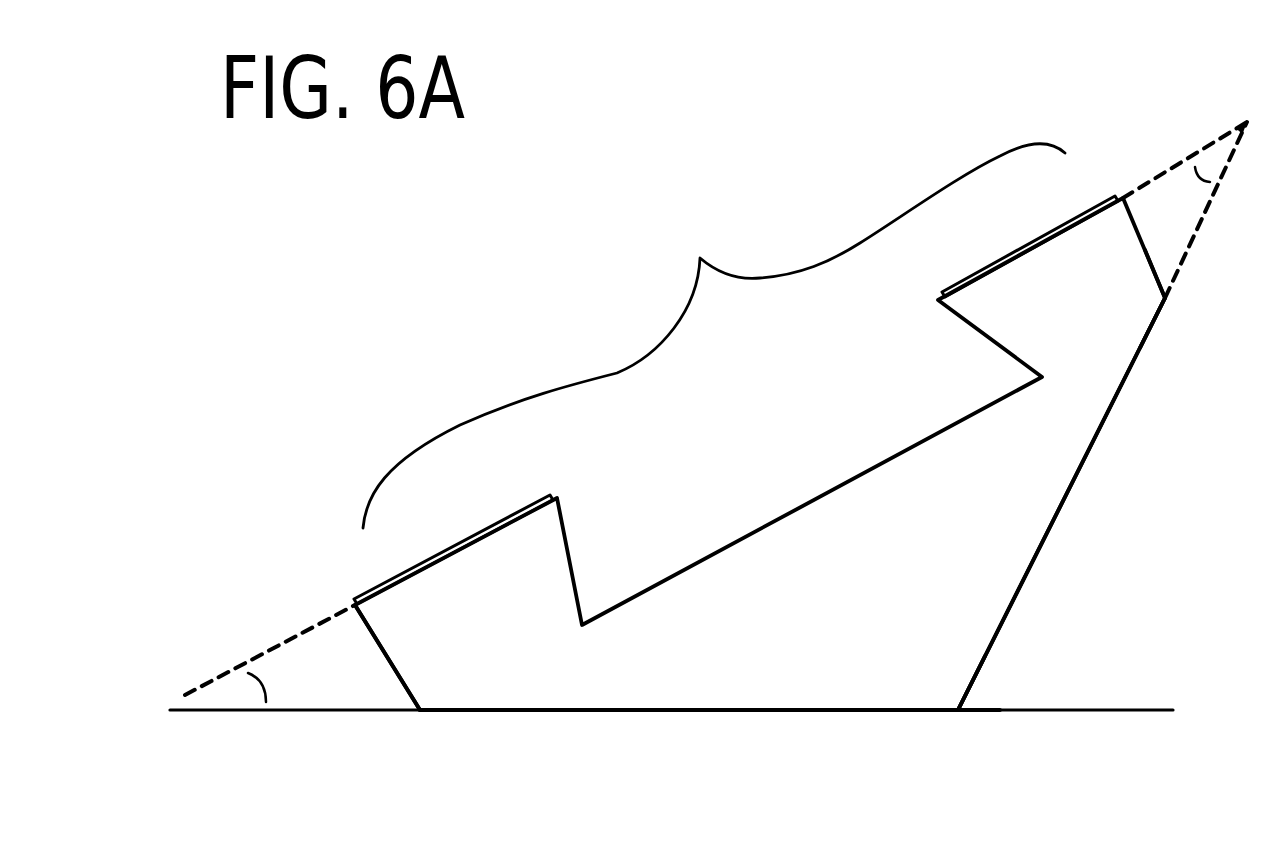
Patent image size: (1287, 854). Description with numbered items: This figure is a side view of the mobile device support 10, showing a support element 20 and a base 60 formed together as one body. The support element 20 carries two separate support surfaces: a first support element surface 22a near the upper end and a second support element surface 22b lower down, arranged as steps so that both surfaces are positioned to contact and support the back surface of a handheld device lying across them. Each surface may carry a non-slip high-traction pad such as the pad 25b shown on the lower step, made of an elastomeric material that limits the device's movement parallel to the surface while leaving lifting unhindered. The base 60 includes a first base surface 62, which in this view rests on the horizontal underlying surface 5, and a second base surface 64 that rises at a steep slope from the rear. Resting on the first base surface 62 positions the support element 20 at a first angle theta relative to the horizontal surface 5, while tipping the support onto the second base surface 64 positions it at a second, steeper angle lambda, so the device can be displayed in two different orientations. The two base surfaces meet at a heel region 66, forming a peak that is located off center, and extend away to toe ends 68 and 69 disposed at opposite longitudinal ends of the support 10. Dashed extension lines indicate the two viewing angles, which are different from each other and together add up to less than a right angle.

The horizontal surface 5 is at (1087, 700).
The mobile device support 10 is at (919, 130).
The support element 20 is at (714, 336).
The first support element surface 22a is at (1080, 198).
The second support element surface 22b is at (462, 523).
The high-traction pad 25b is at (372, 577).
The base 60 is at (893, 722).
The first base surface 62 is at (665, 718).
The second base surface 64 is at (1045, 550).
The heel region 66 is at (957, 720).
The toe end 68 is at (413, 732).
The toe end 69 is at (1168, 305).